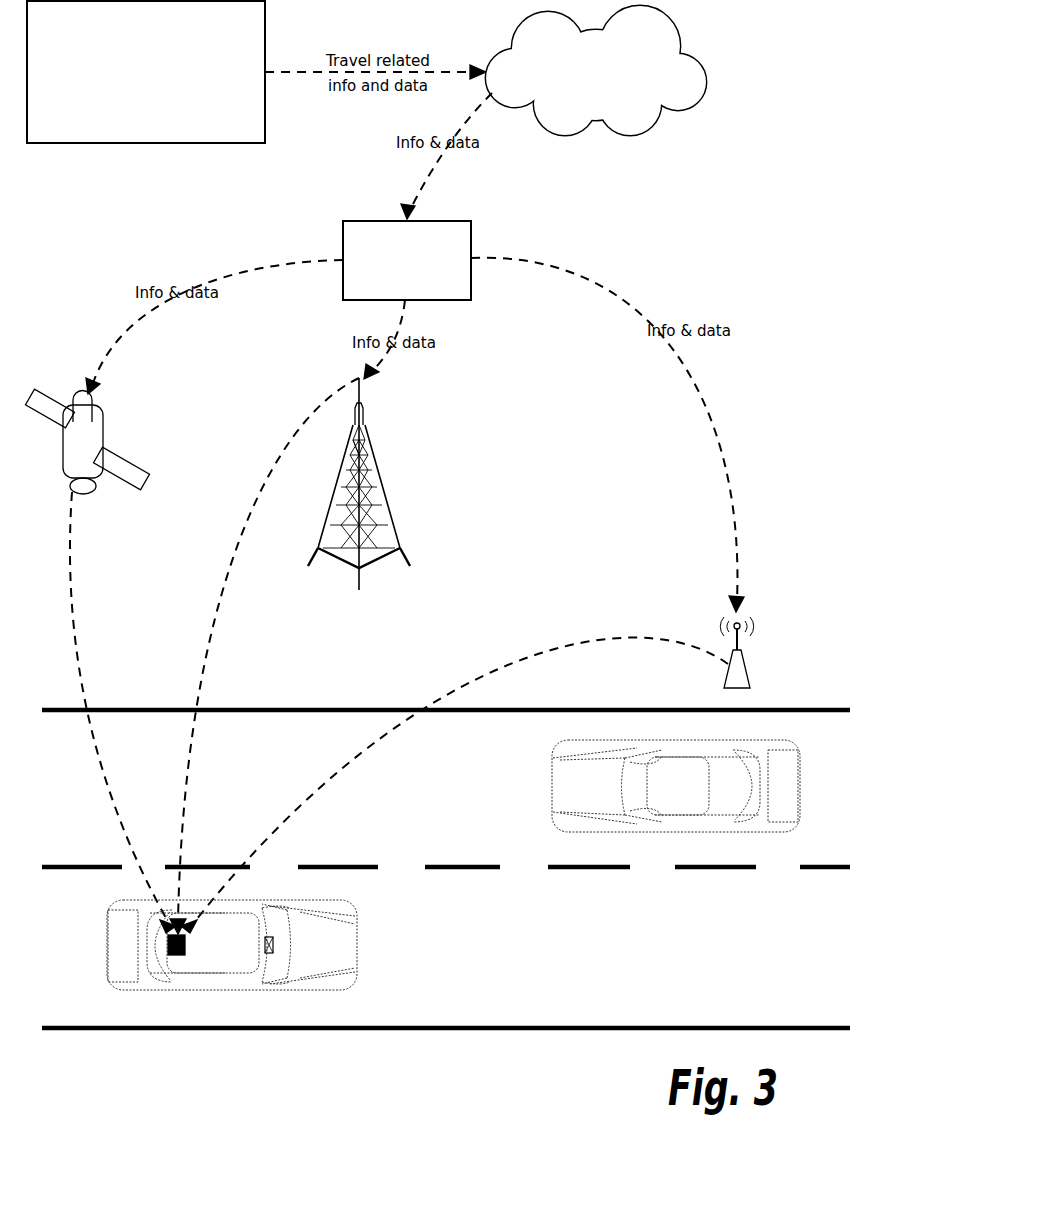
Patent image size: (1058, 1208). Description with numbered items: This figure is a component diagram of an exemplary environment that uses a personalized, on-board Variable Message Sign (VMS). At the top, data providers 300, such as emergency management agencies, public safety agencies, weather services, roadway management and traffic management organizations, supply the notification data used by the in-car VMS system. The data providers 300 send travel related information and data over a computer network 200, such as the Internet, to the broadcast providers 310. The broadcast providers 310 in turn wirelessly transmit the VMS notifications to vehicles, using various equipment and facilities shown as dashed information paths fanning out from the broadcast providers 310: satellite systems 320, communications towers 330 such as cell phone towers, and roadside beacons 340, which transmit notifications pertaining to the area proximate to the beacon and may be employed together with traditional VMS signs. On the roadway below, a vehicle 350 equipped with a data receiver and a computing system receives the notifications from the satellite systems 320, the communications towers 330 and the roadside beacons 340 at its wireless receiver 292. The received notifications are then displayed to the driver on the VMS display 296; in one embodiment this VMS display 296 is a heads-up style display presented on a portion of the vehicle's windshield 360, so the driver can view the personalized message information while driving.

The data providers 300 is at (146, 72).
The computer network 200 is at (596, 70).
The broadcast providers 310 is at (407, 260).
The satellite systems 320 is at (103, 426).
The communications towers 330 is at (362, 425).
The roadside beacons 340 is at (733, 623).
The vehicle 350 is at (357, 946).
The windshield 360 is at (262, 923).
The VMS display 296 is at (273, 947).
The wireless receiver 292 is at (178, 955).